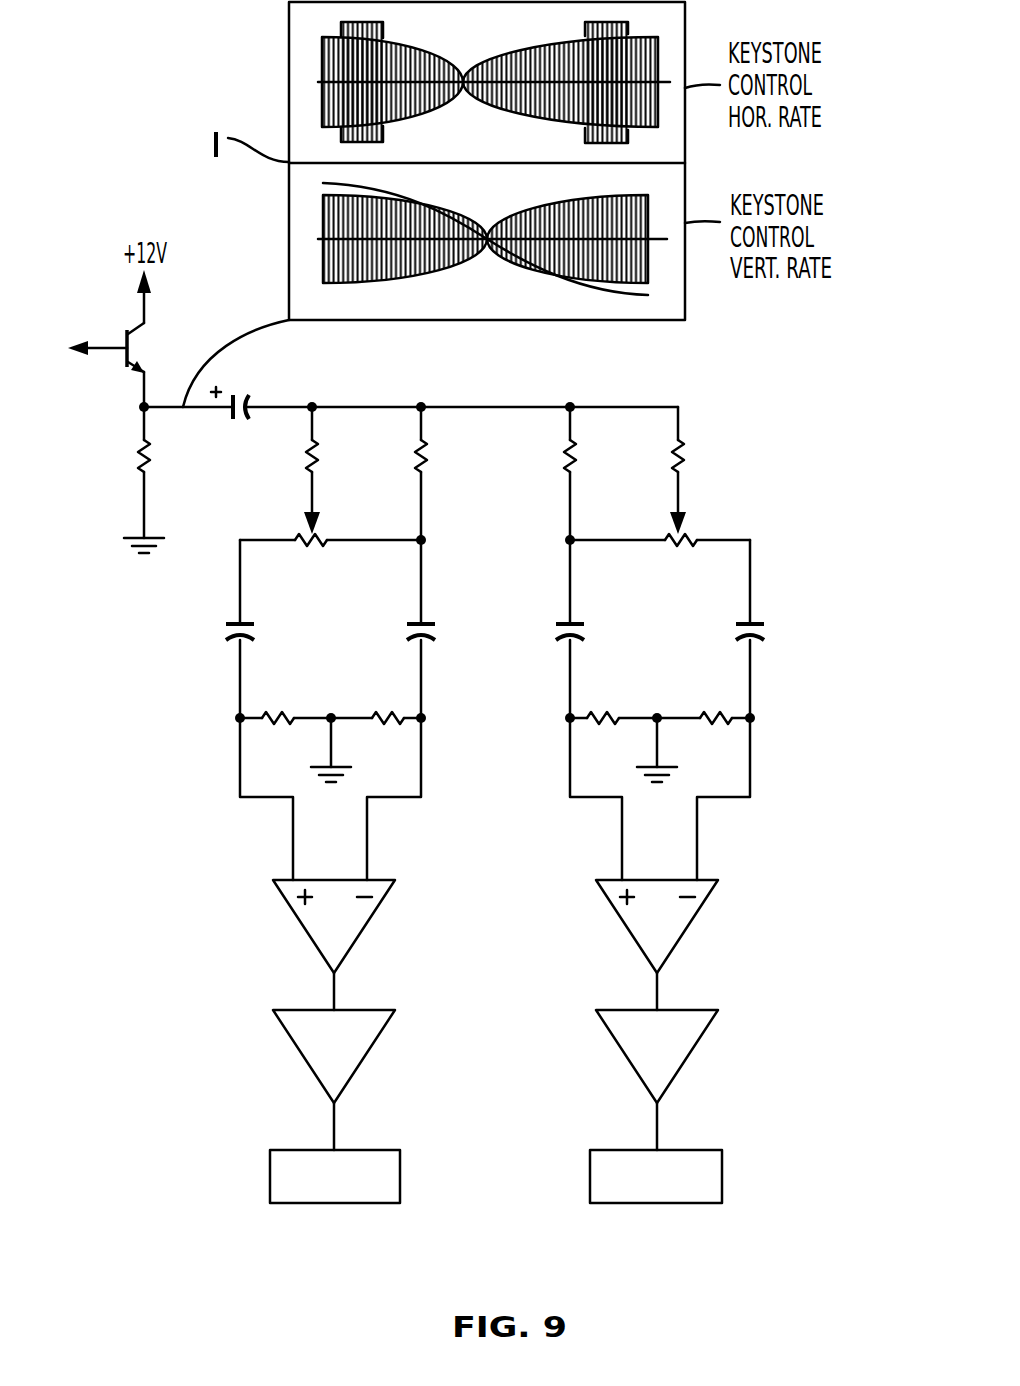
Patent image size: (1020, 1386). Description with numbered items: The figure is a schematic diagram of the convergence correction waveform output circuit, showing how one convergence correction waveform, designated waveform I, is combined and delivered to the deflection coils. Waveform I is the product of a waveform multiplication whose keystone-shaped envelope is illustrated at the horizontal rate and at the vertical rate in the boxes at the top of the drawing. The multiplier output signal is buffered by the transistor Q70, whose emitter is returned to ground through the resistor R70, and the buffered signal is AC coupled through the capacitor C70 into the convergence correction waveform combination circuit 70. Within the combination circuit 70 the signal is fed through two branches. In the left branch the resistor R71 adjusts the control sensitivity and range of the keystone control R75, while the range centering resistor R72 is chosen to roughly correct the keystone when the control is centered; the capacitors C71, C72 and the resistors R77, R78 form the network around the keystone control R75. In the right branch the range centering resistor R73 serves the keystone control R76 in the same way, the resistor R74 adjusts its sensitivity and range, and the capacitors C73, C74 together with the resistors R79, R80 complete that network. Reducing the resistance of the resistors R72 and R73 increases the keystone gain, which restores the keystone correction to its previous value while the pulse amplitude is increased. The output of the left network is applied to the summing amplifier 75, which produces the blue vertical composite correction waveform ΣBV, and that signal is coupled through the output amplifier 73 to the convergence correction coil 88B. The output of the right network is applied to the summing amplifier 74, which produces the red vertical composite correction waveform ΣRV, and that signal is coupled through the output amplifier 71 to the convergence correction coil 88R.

The convergence correction waveform combination circuit 70 is at (514, 537).
The output amplifier 71 is at (620, 1050).
The output amplifier 73 is at (362, 1047).
The summing amplifier 74 is at (620, 923).
The summing amplifier 75 is at (372, 918).
The convergence correction coil 88B is at (400, 1153).
The convergence correction coil 88R is at (590, 1152).
The transistor Q70 is at (123, 338).
The resistor R70 is at (128, 480).
The capacitor C70 is at (236, 461).
The resistor R71 is at (334, 470).
The range centering resistor R72 is at (444, 473).
The range centering resistor R73 is at (592, 473).
The resistor R74 is at (702, 470).
The keystone control R75 is at (330, 576).
The keystone control R76 is at (660, 576).
The resistor R77 is at (285, 685).
The resistor R78 is at (376, 685).
The resistor R79 is at (613, 685).
The resistor R80 is at (703, 685).
The capacitor C71 is at (214, 629).
The capacitor C72 is at (448, 629).
The capacitor C73 is at (546, 629).
The capacitor C74 is at (778, 629).